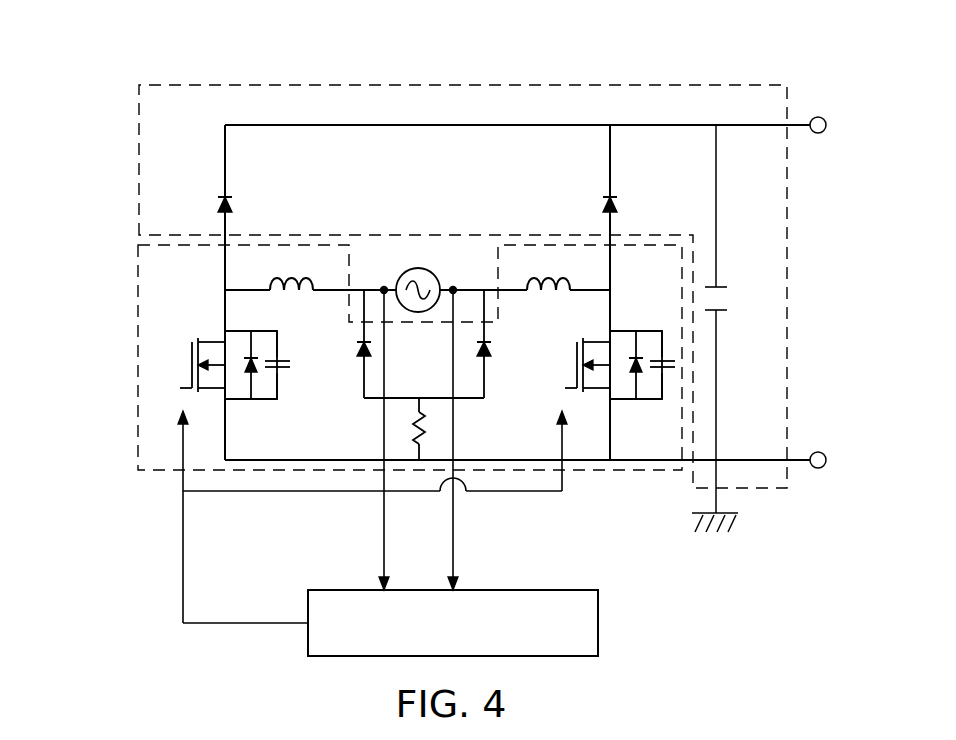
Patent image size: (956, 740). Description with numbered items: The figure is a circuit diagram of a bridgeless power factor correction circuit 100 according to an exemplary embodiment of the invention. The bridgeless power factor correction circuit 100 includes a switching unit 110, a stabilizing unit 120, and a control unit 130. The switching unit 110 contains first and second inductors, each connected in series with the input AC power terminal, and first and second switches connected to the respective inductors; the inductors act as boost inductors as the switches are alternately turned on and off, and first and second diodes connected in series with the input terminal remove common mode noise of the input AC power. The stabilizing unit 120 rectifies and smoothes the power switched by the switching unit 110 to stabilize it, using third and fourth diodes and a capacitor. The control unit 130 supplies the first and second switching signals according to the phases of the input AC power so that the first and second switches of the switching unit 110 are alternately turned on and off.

The bridgeless power factor correction circuit 100 is at (467, 31).
The switching unit 110 is at (138, 392).
The stabilizing unit 120 is at (575, 85).
The control unit 130 is at (537, 590).